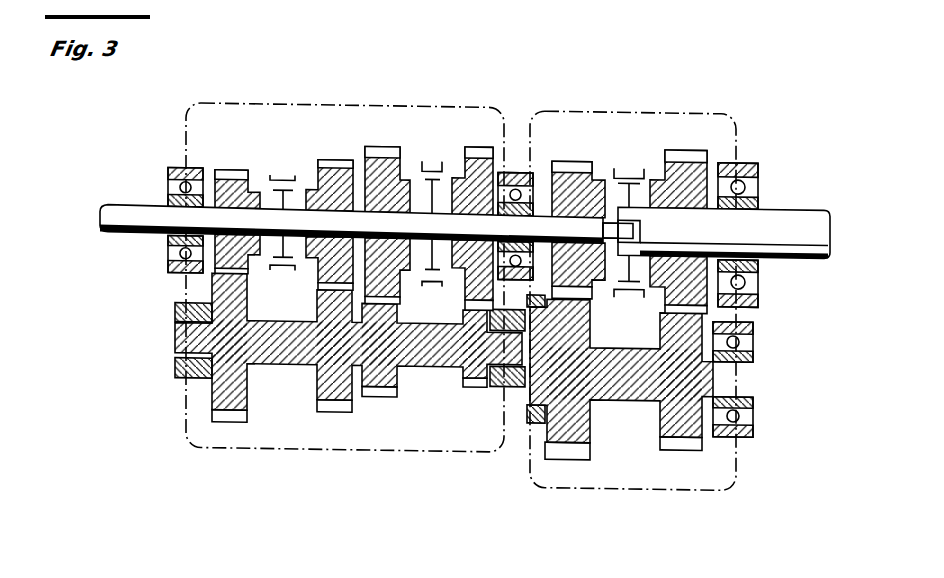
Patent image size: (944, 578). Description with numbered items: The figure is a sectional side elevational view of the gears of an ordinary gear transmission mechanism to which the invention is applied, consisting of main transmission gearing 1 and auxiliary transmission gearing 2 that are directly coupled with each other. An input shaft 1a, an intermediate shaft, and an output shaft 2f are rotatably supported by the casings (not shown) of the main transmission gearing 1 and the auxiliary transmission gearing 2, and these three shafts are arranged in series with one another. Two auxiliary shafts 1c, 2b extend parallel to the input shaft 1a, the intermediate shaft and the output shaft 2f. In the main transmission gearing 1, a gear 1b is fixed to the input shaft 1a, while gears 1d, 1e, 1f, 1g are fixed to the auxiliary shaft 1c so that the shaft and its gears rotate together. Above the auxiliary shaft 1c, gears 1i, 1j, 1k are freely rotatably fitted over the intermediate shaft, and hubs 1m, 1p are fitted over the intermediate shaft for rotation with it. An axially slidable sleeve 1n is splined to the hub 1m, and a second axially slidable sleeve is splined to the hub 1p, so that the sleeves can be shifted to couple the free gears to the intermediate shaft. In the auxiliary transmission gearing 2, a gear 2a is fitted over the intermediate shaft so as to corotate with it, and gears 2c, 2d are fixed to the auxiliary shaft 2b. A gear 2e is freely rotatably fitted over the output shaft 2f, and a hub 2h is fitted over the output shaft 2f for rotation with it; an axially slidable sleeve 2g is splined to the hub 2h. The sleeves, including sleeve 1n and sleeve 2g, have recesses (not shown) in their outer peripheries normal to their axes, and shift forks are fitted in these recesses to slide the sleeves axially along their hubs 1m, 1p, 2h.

The main transmission gearing 1 is at (262, 99).
The input shaft 1a is at (118, 233).
The gear 1b is at (205, 173).
The auxiliary shaft 1c is at (177, 329).
The gear 1d is at (232, 403).
The gear 1e is at (332, 395).
The gear 1f is at (383, 371).
The gear 1g is at (473, 378).
The gear 1i is at (318, 157).
The gear 1j is at (384, 165).
The gear 1k is at (478, 163).
The hub 1m is at (282, 263).
The sleeve 1n is at (285, 166).
The hub 1p is at (432, 281).
The auxiliary transmission gearing 2 is at (628, 103).
The gear 2a is at (572, 157).
The auxiliary shaft 2b is at (598, 379).
The gear 2c is at (573, 434).
The gear 2d is at (688, 427).
The gear 2e is at (707, 147).
The output shaft 2f is at (787, 233).
The sleeve 2g is at (637, 152).
The hub 2h is at (641, 288).